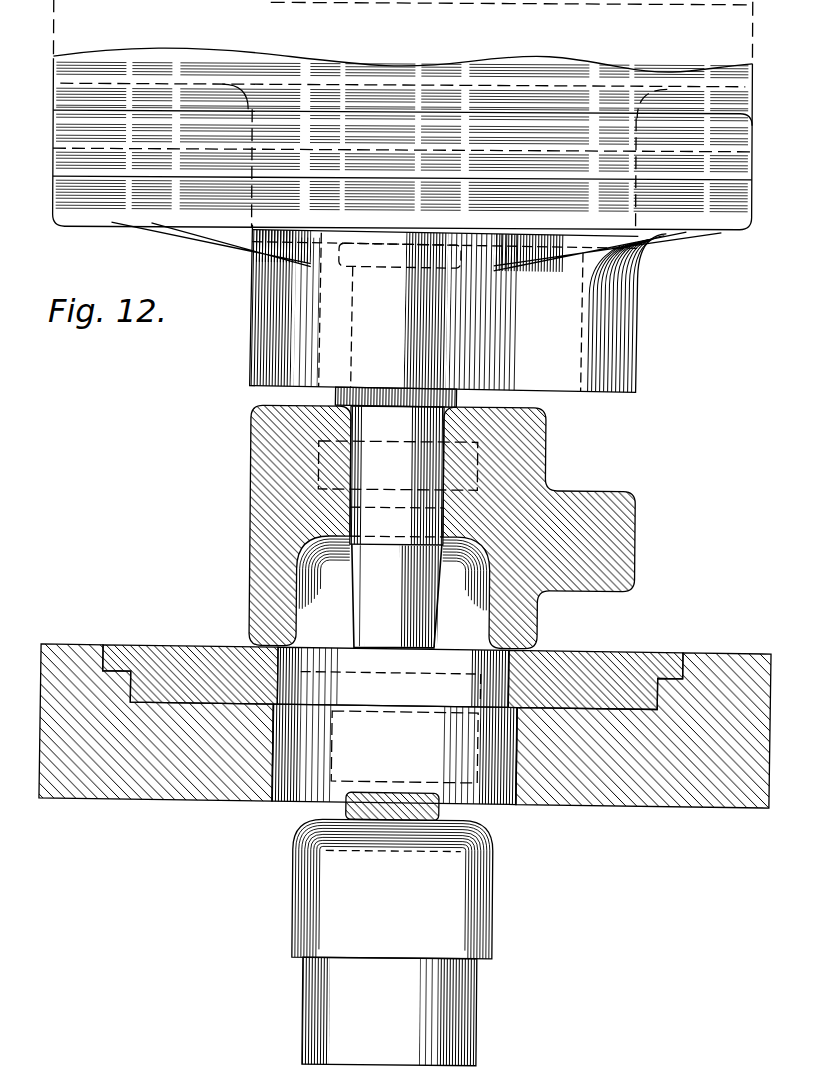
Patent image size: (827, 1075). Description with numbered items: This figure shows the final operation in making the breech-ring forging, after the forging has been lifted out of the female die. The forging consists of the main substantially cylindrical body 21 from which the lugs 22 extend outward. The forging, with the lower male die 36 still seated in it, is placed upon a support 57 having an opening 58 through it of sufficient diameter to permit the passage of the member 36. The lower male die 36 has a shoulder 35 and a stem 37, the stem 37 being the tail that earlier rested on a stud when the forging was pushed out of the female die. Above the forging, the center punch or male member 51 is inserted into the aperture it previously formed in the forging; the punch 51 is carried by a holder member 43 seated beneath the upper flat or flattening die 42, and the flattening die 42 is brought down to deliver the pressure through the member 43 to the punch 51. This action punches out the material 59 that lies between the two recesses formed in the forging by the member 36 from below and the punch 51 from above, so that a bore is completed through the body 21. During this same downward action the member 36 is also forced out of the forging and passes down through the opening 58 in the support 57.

The upper flat or flattening die 42 is at (727, 210).
The punch holder 43 is at (615, 340).
The main substantially cylindrical body 21 is at (476, 527).
The lugs 22 is at (620, 546).
The center punch or male member 51 is at (415, 608).
The support 57 is at (612, 657).
The opening 58 is at (404, 760).
The punched-out material 59 is at (345, 812).
The lower male die 36 is at (392, 889).
The shoulder 35 is at (389, 962).
The stem 37 is at (478, 1005).